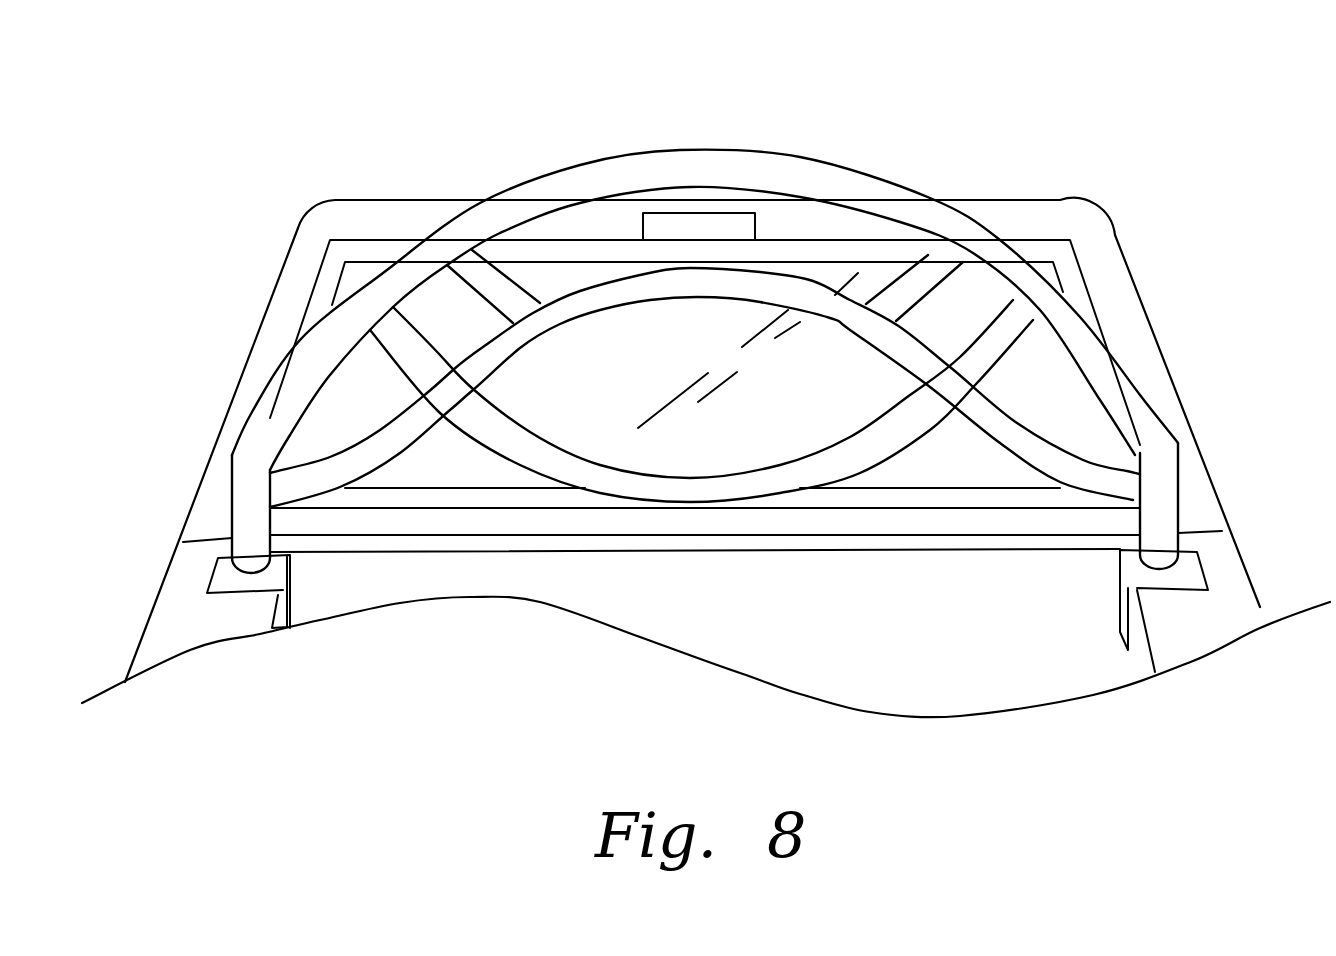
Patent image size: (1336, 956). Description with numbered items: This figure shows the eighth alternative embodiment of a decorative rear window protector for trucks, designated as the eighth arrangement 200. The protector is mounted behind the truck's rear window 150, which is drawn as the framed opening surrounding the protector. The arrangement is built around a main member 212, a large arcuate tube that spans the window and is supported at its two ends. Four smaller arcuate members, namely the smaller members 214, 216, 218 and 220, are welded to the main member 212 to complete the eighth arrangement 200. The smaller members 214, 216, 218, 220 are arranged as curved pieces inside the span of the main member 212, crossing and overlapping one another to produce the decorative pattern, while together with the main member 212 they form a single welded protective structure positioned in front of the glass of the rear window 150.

The rear window 150 is at (1083, 276).
The eighth arrangement 200 is at (747, 336).
The main member 212 is at (743, 173).
The smaller member 214 is at (848, 455).
The smaller member 216 is at (1033, 447).
The smaller member 218 is at (490, 284).
The smaller member 220 is at (917, 285).